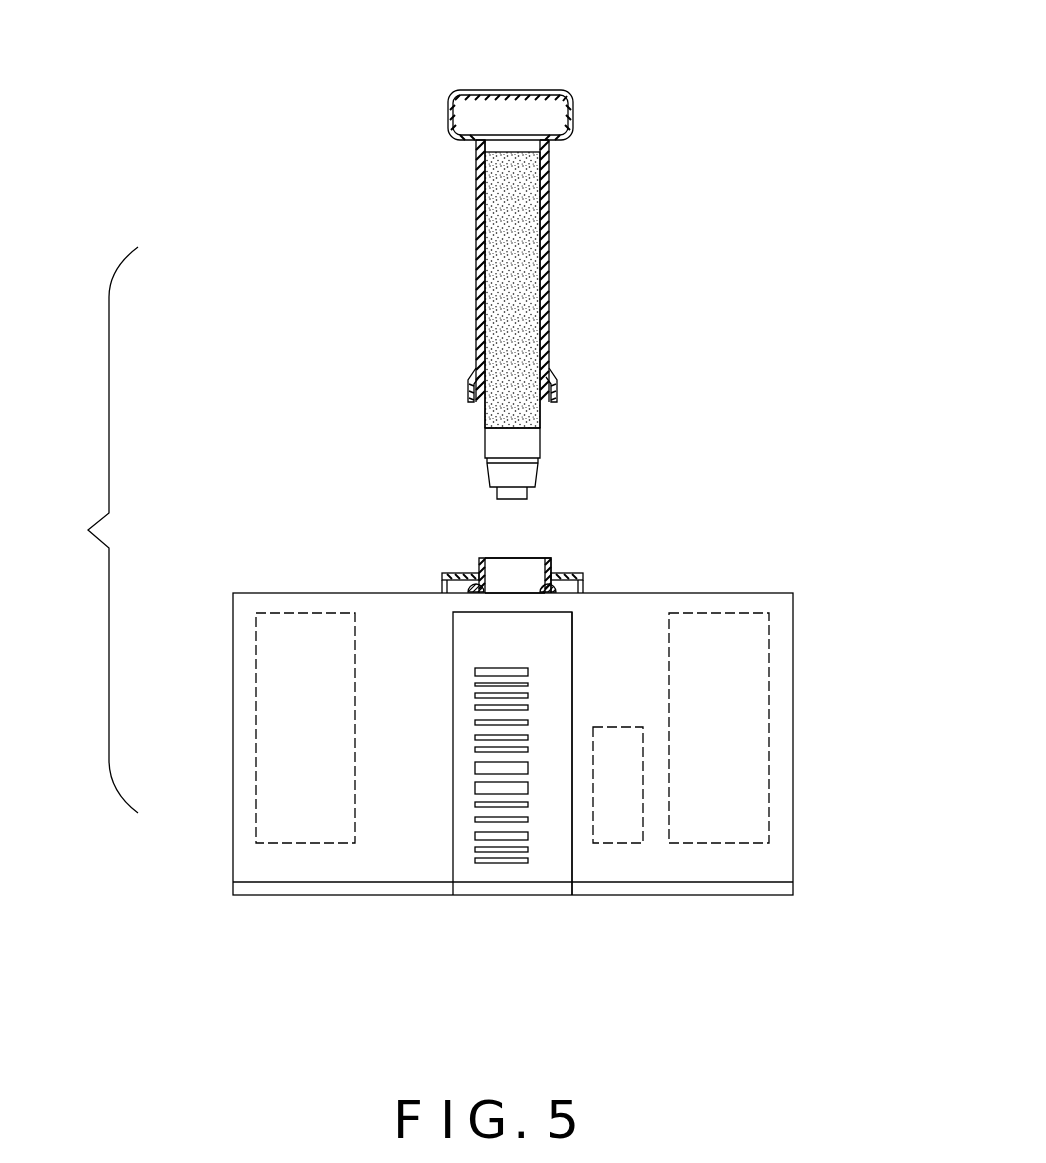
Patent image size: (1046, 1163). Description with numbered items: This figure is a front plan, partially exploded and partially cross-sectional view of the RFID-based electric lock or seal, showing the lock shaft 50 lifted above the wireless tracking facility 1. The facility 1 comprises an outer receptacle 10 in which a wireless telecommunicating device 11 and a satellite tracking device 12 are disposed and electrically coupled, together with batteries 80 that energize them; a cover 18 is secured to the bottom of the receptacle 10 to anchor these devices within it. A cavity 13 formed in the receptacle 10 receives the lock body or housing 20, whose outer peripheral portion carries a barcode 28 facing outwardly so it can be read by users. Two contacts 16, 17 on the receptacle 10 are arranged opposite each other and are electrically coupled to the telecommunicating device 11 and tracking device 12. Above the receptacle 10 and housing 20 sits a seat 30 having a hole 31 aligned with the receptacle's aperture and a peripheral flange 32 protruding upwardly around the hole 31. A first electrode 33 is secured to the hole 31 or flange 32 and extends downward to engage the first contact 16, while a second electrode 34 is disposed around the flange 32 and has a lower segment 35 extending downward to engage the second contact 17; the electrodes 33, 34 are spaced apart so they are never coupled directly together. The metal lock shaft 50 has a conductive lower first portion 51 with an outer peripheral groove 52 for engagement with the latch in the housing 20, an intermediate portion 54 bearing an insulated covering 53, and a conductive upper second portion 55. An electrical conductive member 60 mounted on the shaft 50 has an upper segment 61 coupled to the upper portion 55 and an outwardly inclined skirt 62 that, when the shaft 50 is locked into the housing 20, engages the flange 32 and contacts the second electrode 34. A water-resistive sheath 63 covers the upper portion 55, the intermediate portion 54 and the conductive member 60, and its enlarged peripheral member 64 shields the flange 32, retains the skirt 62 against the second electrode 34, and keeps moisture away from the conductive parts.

The wireless tracking facility 1 is at (518, 738).
The receptacle 10 is at (790, 838).
The wireless telecommunicating device 11 is at (713, 827).
The satellite tracking device 12 is at (307, 822).
The cavity 13 is at (573, 837).
The first contact 16 is at (557, 591).
The second contact 17 is at (442, 588).
The cover 18 is at (770, 890).
The housing 20 is at (538, 870).
The barcode 28 is at (478, 772).
The seat 30 is at (459, 542).
The hole 31 is at (481, 560).
The peripheral flange 32 is at (492, 557).
The first electrode 33 is at (551, 560).
The second electrode 34 is at (476, 570).
The lower segment 35 is at (492, 593).
The lock shaft 50 is at (509, 257).
The first portion 51 is at (493, 443).
The groove 52 is at (527, 463).
The non-conductive covering 53 is at (527, 318).
The intermediate portion 54 is at (543, 415).
The second portion 55 is at (478, 105).
The electrical conductive member 60 is at (476, 290).
The upper segment 61 is at (476, 150).
The skirt 62 is at (468, 388).
The sheath 63 is at (551, 240).
The peripheral member 64 is at (557, 388).
The batteries 80 is at (623, 828).